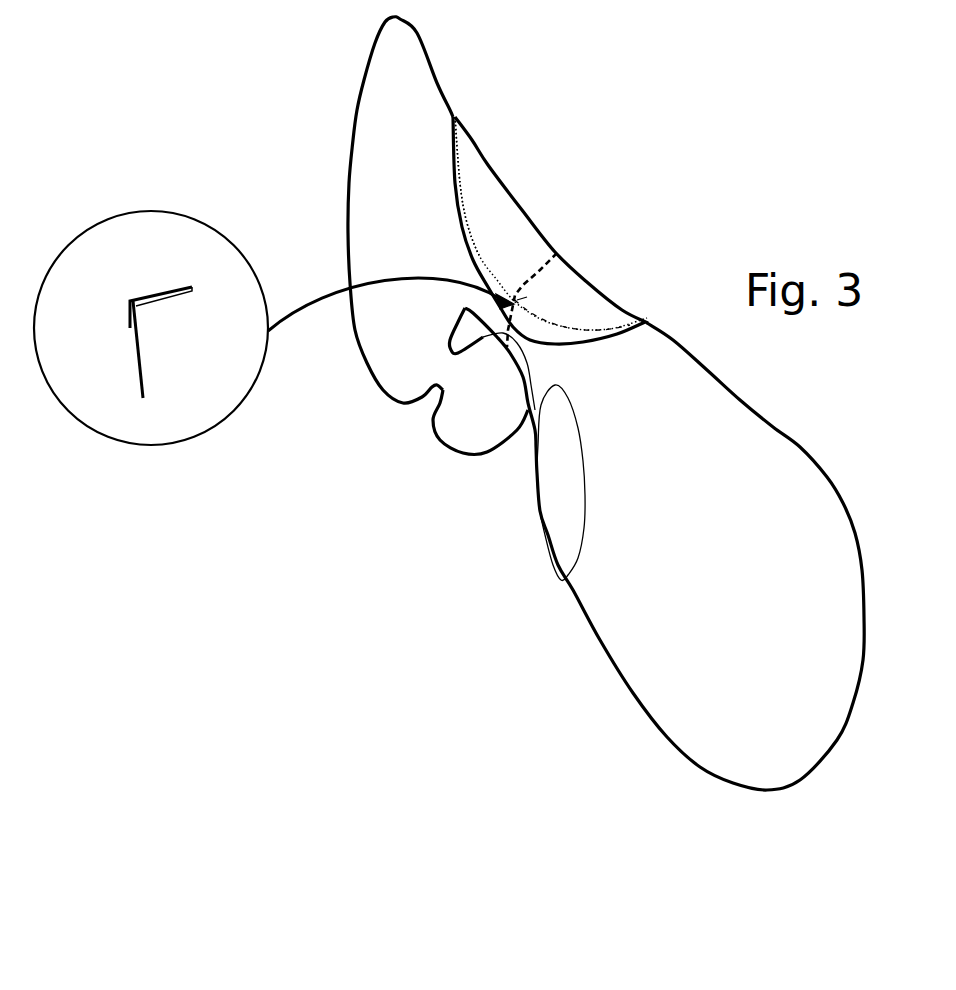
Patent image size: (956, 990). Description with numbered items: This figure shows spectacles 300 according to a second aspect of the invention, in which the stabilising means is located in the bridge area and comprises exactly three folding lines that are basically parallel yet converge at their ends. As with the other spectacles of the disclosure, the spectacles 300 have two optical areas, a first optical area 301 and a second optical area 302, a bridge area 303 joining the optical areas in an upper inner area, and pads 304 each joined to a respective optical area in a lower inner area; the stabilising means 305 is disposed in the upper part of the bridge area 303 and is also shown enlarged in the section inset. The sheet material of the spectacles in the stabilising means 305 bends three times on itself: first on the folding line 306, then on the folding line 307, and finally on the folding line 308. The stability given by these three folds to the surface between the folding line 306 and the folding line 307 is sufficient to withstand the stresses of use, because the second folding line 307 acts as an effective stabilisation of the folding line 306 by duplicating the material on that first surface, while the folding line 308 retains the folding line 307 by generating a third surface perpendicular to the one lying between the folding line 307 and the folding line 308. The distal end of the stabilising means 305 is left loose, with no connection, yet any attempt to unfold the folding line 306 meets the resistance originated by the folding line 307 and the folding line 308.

The spectacles 300 is at (359, 318).
The body 301 is at (770, 460).
The blade portion 302 is at (380, 168).
The sheet 303 is at (533, 343).
The lobe 304 is at (478, 418).
The layer 305 is at (161, 293).
The folding line 306 is at (473, 227).
The folding line 307 is at (553, 243).
The folding line 308 is at (527, 297).